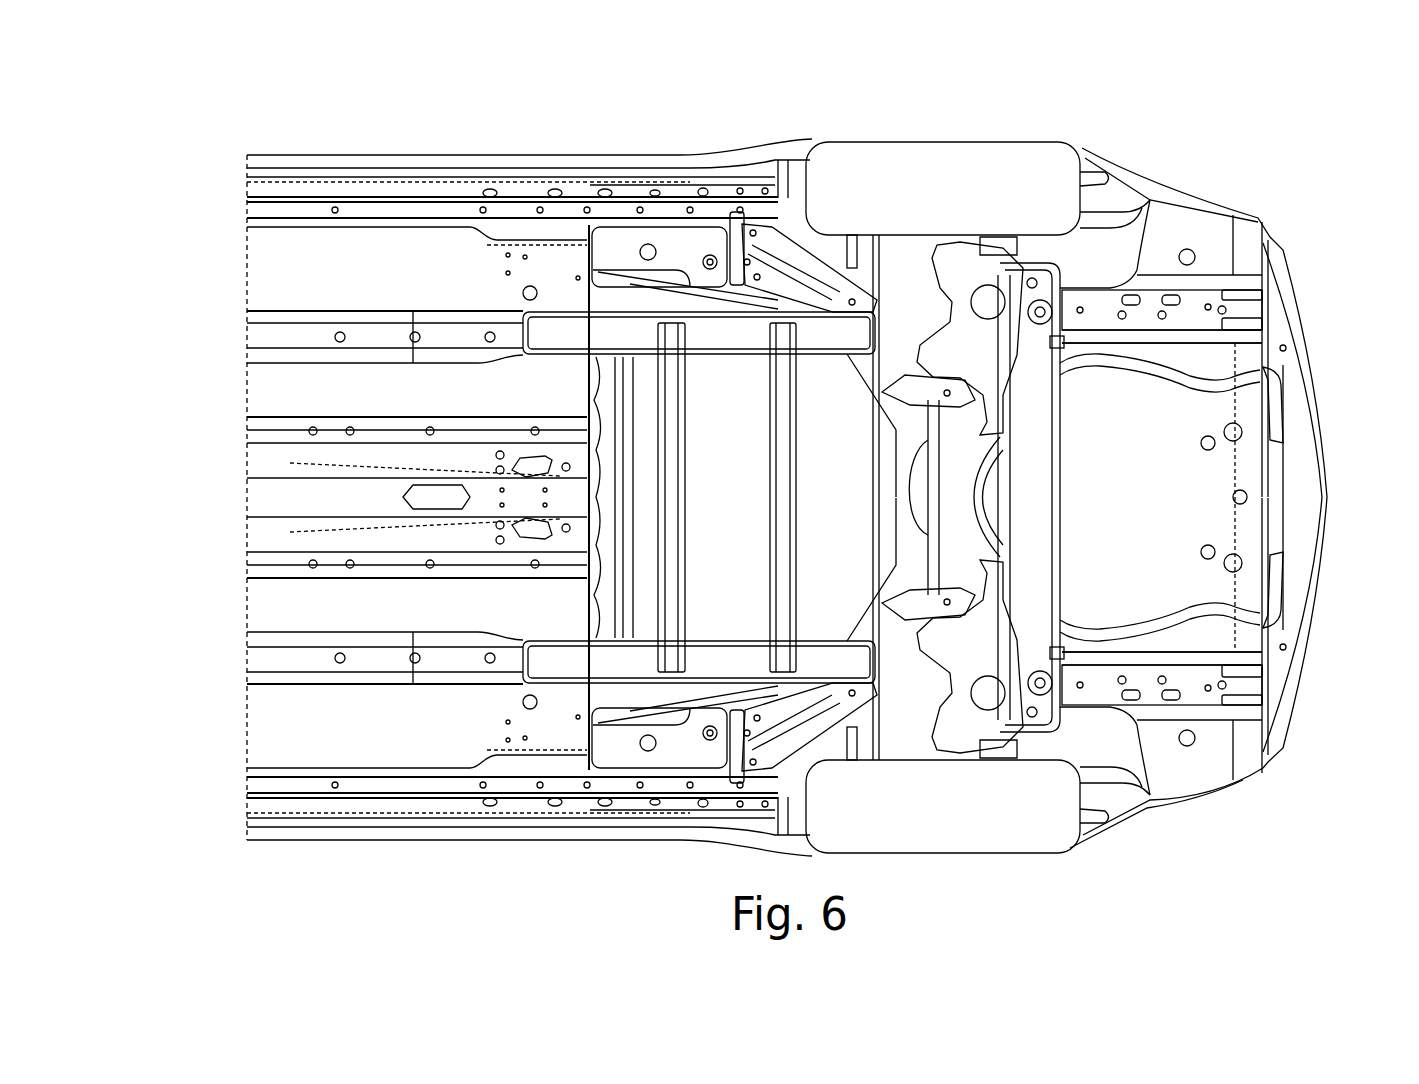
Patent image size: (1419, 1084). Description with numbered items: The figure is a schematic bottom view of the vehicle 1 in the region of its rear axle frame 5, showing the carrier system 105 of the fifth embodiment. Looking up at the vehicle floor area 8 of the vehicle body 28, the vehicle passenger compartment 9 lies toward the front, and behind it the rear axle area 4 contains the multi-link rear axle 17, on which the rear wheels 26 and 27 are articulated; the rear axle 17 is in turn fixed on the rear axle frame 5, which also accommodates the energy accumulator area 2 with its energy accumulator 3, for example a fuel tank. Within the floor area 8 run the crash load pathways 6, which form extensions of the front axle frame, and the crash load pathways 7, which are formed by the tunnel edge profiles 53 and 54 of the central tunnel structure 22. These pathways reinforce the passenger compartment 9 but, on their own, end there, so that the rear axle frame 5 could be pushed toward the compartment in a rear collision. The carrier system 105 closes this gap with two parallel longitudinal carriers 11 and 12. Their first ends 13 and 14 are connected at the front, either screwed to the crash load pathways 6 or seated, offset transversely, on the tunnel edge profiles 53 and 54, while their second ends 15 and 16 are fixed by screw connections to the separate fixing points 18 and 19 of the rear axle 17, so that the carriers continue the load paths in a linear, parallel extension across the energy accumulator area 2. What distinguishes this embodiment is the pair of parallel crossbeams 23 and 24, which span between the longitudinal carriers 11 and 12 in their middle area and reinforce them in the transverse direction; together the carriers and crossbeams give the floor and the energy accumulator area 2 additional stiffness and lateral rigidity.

The vehicle 1 is at (1293, 187).
The energy accumulator area 2 is at (857, 499).
The energy accumulator 3 is at (720, 541).
The rear axle area 4 is at (962, 550).
The rear axle frame 5 is at (715, 235).
The crash load pathways 6 is at (262, 340).
The crash load pathways 7 is at (258, 412).
The vehicle floor area 8 is at (363, 243).
The vehicle passenger compartment 9 is at (290, 258).
The longitudinal carrier 11 is at (753, 340).
The longitudinal carrier 12 is at (598, 650).
The first end 13 is at (555, 327).
The first end 14 is at (520, 688).
The second end 15 is at (858, 340).
The second end 16 is at (848, 655).
The rear axle 17 is at (1022, 447).
The fixing point 18 is at (857, 333).
The fixing point 19 is at (850, 640).
The central tunnel structure 22 is at (277, 493).
The crossbeam 23 is at (673, 437).
The crossbeam 24 is at (781, 618).
The rear wheel 26 is at (1020, 170).
The rear wheel 27 is at (970, 830).
The vehicle body 28 is at (265, 185).
The tunnel edge profile 53 is at (330, 412).
The tunnel edge profile 54 is at (330, 568).
The carrier system 105 is at (655, 457).